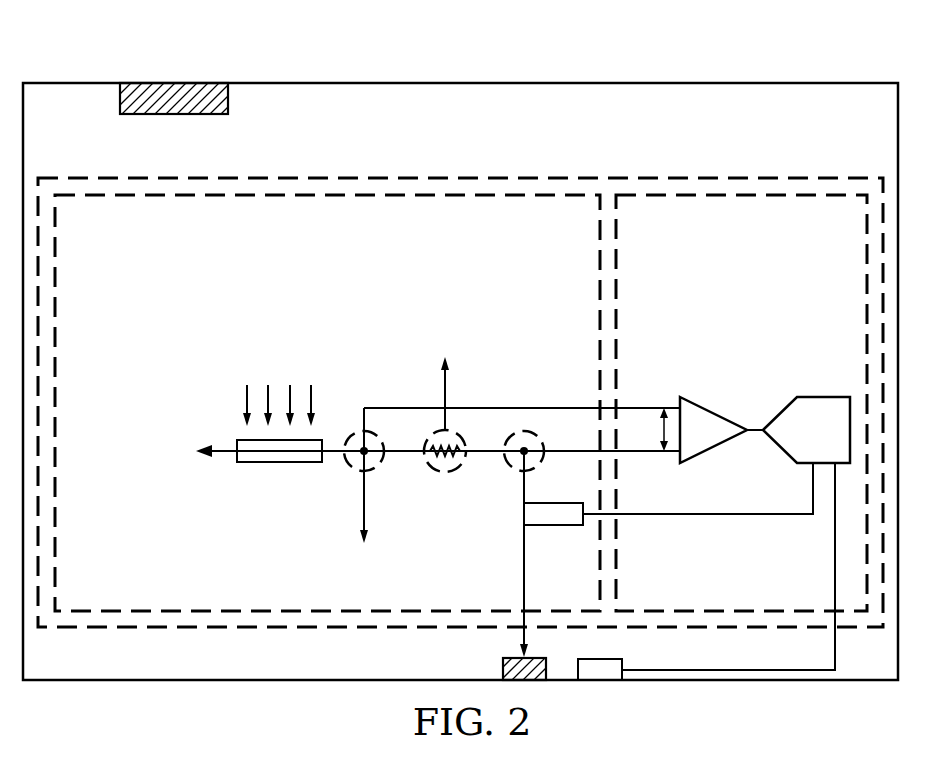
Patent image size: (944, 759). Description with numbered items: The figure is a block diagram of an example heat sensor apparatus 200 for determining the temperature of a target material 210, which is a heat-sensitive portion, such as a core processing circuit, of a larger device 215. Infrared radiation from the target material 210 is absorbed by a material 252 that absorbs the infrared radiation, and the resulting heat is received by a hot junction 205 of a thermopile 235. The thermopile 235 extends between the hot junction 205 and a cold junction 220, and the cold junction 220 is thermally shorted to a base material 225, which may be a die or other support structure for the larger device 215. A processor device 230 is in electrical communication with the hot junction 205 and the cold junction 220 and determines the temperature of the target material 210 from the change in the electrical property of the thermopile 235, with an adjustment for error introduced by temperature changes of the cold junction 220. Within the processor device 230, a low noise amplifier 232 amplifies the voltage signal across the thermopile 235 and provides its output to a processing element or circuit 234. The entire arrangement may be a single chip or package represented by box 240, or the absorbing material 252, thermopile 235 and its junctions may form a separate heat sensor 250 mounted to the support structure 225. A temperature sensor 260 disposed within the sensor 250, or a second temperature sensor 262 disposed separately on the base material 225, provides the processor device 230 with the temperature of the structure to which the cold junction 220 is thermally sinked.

The heat sensor apparatus 200 is at (556, 152).
The hot junction 205 is at (355, 454).
The target material 210 is at (172, 116).
The larger device 215 is at (296, 78).
The cold junction 220 is at (518, 462).
The base material 225 is at (503, 656).
The processor device 230 is at (713, 276).
The low noise amplifier 232 is at (697, 399).
The processing element or circuit 234 is at (798, 444).
The thermopile 235 is at (448, 442).
The single chip or package 240 is at (708, 170).
The heat sensor 250 is at (270, 278).
The material that absorbs infrared radiation 252 is at (227, 454).
The temperature sensor 260 is at (554, 526).
The second temperature sensor 262 is at (605, 659).